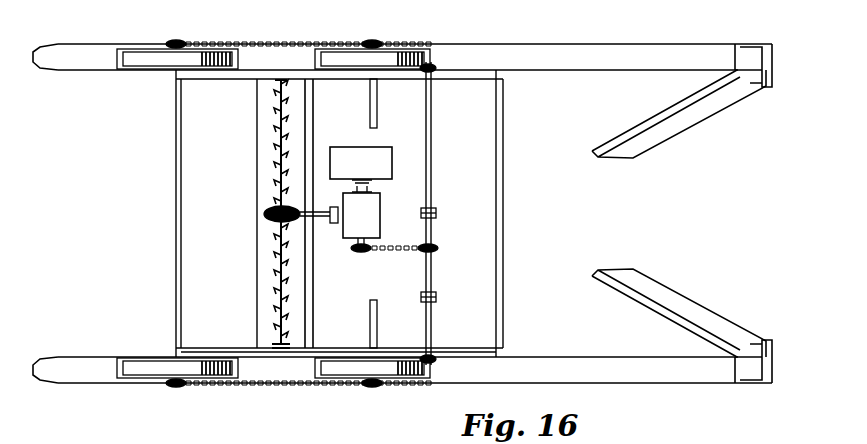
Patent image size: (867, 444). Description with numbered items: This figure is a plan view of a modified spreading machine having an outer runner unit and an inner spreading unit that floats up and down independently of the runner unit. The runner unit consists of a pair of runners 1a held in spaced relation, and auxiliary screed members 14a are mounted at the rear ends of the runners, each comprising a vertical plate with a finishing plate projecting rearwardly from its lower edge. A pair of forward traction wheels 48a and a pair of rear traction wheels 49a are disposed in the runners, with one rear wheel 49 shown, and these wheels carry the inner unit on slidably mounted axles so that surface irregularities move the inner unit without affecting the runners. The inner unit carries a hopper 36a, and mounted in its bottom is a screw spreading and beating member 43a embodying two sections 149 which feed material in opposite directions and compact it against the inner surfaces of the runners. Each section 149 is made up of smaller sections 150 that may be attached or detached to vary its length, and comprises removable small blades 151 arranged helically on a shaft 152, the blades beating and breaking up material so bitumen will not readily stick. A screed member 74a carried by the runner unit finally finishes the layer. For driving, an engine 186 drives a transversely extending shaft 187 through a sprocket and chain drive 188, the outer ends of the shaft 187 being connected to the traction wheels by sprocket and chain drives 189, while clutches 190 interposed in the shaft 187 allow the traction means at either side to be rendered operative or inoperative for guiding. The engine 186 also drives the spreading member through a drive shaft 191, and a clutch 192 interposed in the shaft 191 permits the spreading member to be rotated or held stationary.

The runner 1a is at (651, 53).
The auxiliary screed member 14a is at (707, 123).
The hopper 36a is at (192, 202).
The screw spreading and beating member 43a is at (278, 232).
The forward traction wheel 48a is at (142, 62).
The roller 49 is at (408, 372).
The rear traction wheel 49a is at (406, 56).
The screed member 74a is at (313, 291).
The section 149 is at (278, 138).
The smaller section 150 is at (278, 171).
The small blade 151 is at (278, 107).
The shaft 152 is at (278, 201).
The engine 186 is at (349, 162).
The transversely extending shaft 187 is at (432, 162).
The sprocket and chain drive 188 is at (394, 256).
The sprocket and chain drive 189 is at (412, 70).
The clutch 190 is at (437, 214).
The drive shaft 191 is at (327, 212).
The clutch 192 is at (334, 224).